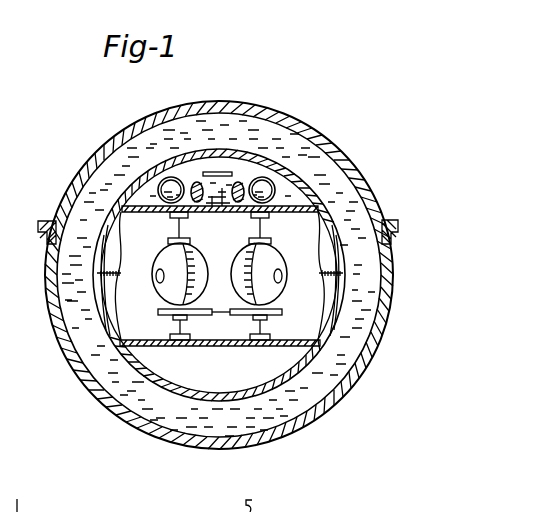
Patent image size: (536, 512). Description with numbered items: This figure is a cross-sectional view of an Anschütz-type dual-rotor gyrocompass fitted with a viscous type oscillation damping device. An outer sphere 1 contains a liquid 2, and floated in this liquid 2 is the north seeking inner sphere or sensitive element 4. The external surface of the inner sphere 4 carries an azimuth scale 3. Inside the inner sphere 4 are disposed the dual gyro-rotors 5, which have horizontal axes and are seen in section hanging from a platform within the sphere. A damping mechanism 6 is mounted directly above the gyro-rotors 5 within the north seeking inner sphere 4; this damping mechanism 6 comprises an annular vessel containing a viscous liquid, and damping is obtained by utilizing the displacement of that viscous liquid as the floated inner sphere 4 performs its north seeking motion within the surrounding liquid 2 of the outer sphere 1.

The outer sphere 1 is at (373, 355).
The liquid 2 is at (373, 305).
The azimuth scale 3 is at (345, 262).
The north seeking inner sphere 4 is at (273, 398).
The dual gyro-rotors 5 is at (233, 309).
The damping mechanism 6 is at (248, 176).